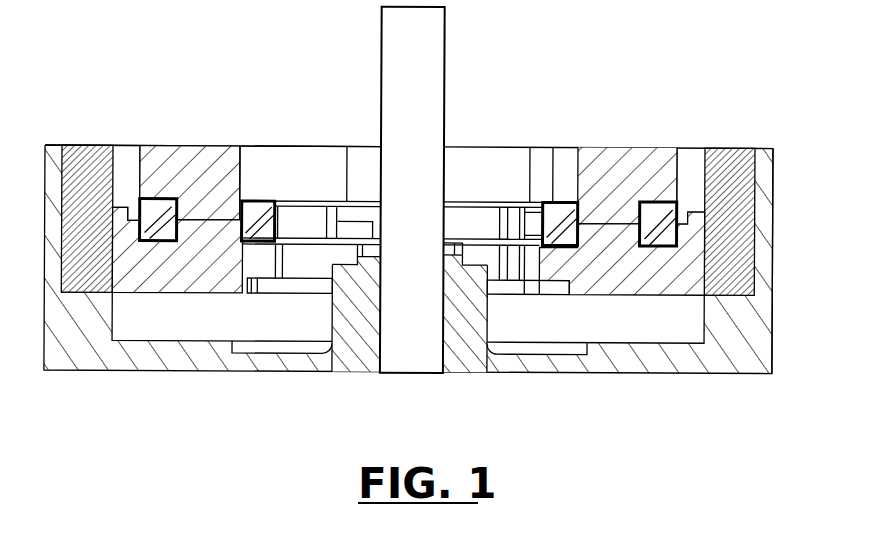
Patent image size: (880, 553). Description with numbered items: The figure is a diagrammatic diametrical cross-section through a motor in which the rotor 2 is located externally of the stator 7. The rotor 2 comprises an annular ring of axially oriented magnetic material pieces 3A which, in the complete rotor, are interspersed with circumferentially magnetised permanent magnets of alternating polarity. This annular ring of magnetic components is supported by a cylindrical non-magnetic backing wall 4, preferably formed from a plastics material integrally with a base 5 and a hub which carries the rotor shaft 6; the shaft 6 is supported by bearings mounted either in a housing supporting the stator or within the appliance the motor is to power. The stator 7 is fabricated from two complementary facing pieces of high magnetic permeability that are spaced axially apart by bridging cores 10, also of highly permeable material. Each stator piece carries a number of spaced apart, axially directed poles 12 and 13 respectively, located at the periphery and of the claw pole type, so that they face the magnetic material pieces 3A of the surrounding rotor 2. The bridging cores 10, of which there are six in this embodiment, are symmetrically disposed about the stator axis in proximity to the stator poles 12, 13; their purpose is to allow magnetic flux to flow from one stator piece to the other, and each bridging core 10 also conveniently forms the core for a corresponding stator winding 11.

The rotor 2 is at (742, 377).
The magnetic material pieces 3A is at (80, 144).
The non-magnetic backing wall 4 is at (775, 247).
The base 5 is at (485, 377).
The rotor shaft 6 is at (446, 82).
The stator 7 is at (210, 125).
The bridging cores 10 is at (235, 194).
The stator winding 11 is at (558, 198).
The poles 12 is at (127, 150).
The poles 13 is at (146, 272).